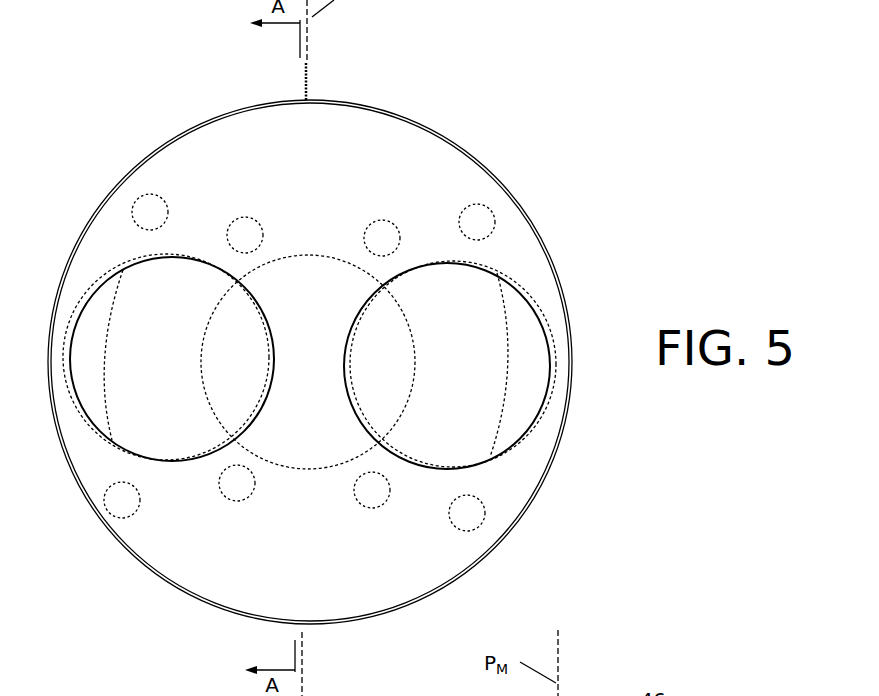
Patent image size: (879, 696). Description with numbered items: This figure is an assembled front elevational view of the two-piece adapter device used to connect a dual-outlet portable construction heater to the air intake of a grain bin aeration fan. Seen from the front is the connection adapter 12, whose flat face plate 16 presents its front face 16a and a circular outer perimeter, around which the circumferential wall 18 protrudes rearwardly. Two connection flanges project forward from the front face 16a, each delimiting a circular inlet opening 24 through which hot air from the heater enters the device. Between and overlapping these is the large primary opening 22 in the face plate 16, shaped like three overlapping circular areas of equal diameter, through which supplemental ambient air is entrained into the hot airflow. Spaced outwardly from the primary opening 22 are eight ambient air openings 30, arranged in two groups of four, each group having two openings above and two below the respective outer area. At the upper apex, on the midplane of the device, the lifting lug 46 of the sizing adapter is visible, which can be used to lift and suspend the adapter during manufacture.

The connection adapter 12 is at (522, 208).
The face plate 16 is at (344, 128).
The front face 16a is at (328, 179).
The circumferential wall 18 is at (557, 285).
The primary opening 22 is at (301, 461).
The inlet opening 24 is at (141, 364).
The ambient air openings 30 is at (150, 212).
The lifting lug 46 is at (308, 97).